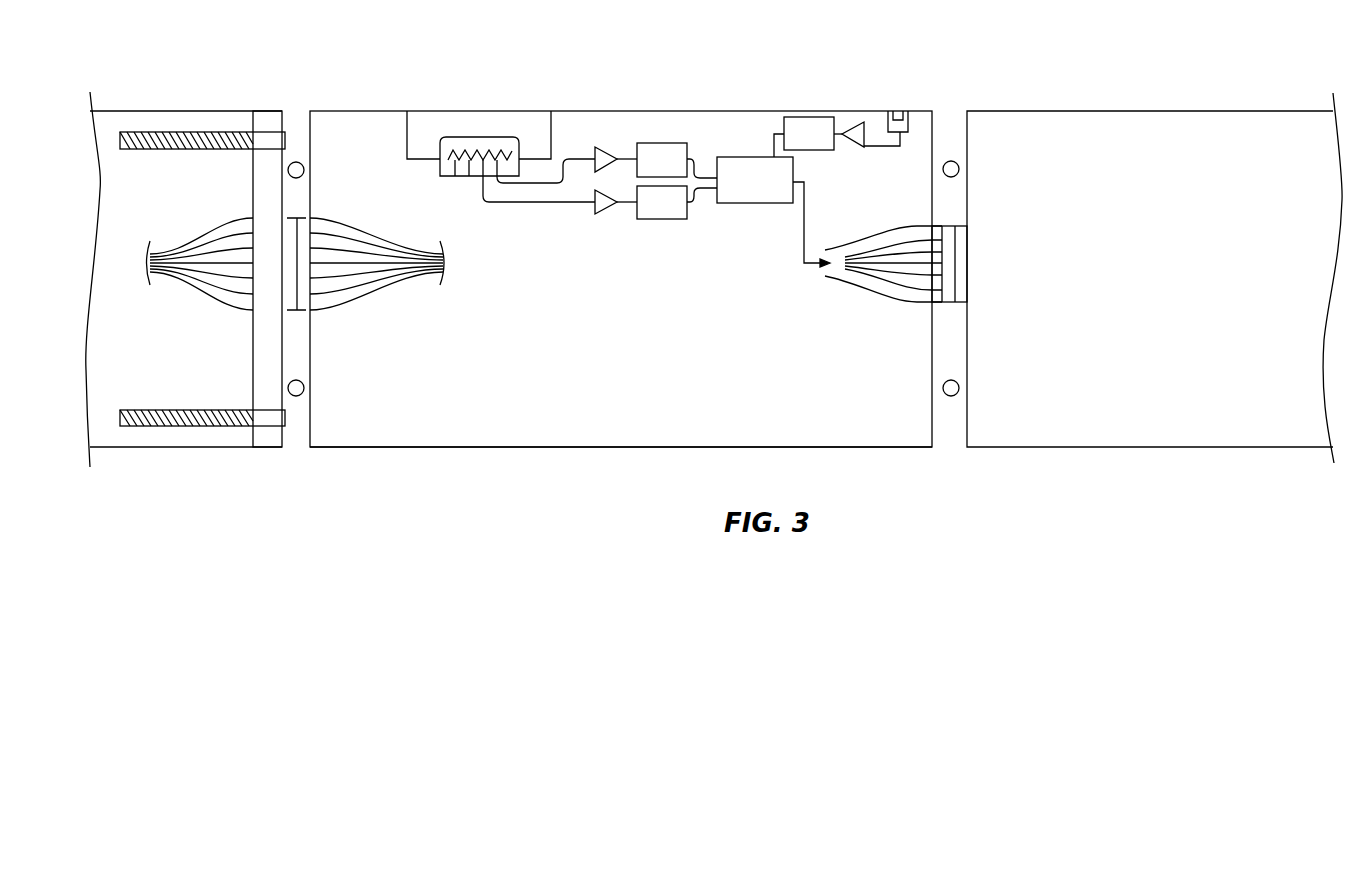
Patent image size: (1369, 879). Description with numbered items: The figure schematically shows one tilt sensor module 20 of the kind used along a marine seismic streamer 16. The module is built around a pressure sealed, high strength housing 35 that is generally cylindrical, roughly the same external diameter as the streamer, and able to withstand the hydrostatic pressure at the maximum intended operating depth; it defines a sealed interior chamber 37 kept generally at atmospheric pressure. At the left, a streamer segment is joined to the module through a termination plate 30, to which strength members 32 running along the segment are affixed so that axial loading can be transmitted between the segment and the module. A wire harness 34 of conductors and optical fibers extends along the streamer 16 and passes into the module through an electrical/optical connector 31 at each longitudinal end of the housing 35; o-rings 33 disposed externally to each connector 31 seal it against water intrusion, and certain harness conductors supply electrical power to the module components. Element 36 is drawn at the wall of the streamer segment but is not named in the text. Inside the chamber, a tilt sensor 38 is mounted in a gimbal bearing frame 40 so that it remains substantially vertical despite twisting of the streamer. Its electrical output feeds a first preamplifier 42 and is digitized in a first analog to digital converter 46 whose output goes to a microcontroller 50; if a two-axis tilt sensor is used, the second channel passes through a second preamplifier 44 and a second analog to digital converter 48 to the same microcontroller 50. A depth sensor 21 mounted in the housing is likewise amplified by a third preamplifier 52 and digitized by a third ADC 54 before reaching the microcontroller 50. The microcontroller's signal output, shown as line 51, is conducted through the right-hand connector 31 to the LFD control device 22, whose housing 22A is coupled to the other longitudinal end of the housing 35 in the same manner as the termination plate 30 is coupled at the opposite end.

The streamer 16 is at (185, 276).
The tilt sensor module 20 is at (587, 244).
The depth sensor 21 is at (900, 117).
The LFD control device 22 is at (1154, 235).
The housing of the LFD control device 22A is at (998, 110).
The termination plate 30 is at (268, 430).
The electrical/optical connector 31 is at (302, 297).
The strength members 32 is at (190, 428).
The o-rings 33 is at (298, 162).
The wire harness 34 is at (363, 217).
The housing 35 is at (410, 452).
The housing wall 36 is at (228, 111).
The sealed interior chamber 37 is at (513, 412).
The tilt sensor 38 is at (485, 137).
The gimbal bearing frame 40 is at (408, 118).
The first preamplifier 42 is at (608, 150).
The second preamplifier 44 is at (605, 215).
The first analog to digital converter 46 is at (663, 143).
The second analog to digital converter 48 is at (660, 220).
The microcontroller 50 is at (737, 157).
The signal output line 51 is at (806, 213).
The third preamplifier 52 is at (855, 122).
The third analog to digital converter 54 is at (810, 117).